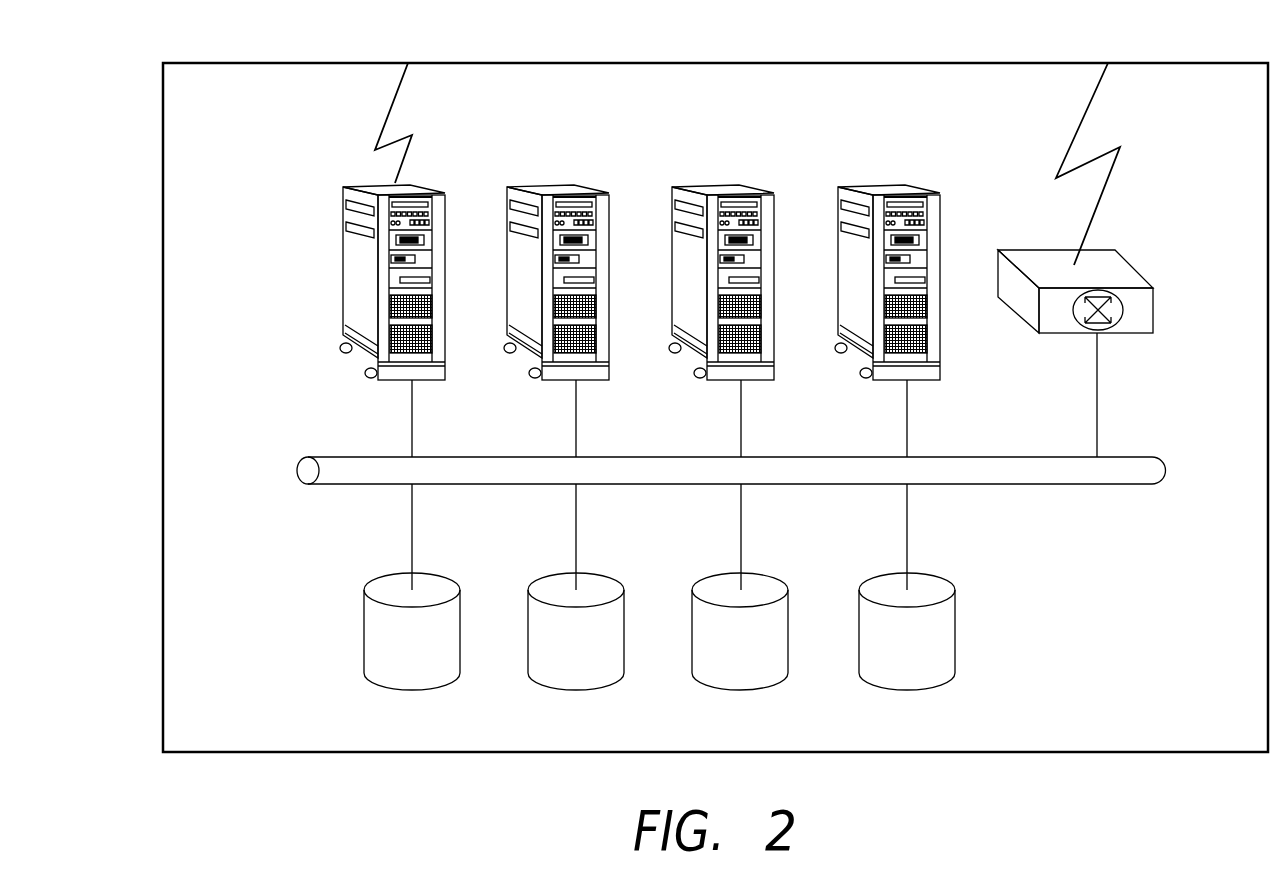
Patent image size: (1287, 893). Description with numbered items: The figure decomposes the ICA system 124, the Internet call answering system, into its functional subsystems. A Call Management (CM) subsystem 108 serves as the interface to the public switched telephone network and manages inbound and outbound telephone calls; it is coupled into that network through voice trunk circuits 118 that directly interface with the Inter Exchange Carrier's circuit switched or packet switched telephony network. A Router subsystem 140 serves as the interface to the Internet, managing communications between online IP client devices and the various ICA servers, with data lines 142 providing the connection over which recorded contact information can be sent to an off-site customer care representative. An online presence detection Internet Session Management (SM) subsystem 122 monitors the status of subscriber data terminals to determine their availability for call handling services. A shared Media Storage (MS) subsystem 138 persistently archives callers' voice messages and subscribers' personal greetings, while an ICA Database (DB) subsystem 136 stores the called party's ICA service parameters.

The ICA system 124 is at (635, 63).
The voice trunk circuits 118 is at (393, 103).
The data lines 142 is at (1088, 110).
The Call Management (CM) subsystem 108 is at (362, 267).
The Internet Session Management (SM) subsystem 122 is at (935, 322).
The Router subsystem 140 is at (1153, 303).
The Media Storage (MS) subsystem 138 is at (375, 625).
The ICA Database (DB) subsystem 136 is at (940, 635).